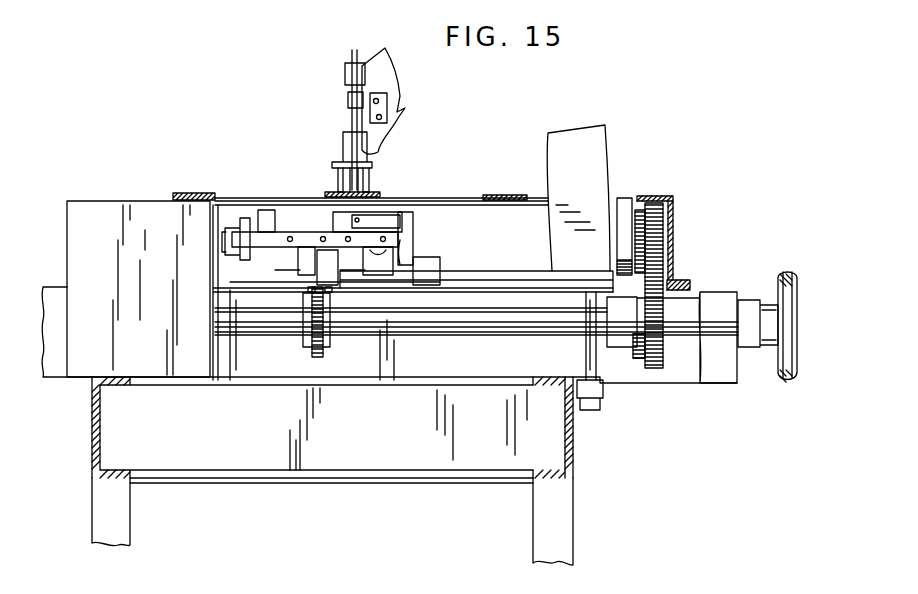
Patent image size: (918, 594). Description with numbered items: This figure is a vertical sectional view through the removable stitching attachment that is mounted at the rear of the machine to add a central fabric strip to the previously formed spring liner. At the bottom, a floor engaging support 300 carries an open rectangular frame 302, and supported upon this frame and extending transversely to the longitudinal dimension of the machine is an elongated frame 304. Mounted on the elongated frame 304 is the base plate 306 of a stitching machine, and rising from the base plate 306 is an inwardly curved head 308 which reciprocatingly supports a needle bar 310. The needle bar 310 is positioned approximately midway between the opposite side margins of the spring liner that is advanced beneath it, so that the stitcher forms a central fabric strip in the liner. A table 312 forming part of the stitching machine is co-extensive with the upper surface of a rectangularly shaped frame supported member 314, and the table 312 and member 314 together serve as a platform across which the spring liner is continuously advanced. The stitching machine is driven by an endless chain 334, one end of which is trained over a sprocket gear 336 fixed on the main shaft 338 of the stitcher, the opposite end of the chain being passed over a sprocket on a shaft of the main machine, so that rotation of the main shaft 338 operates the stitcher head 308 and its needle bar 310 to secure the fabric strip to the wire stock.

The floor engaging support 300 is at (113, 525).
The open rectangular frame 302 is at (420, 460).
The elongated frame 304 is at (432, 370).
The base plate 306 is at (450, 278).
The head 308 is at (395, 80).
The needle bar 310 is at (350, 120).
The table 312 is at (443, 203).
The frame supported member 314 is at (142, 210).
The endless chain 334 is at (303, 340).
The sprocket gear 336 is at (329, 343).
The main shaft 338 is at (560, 322).